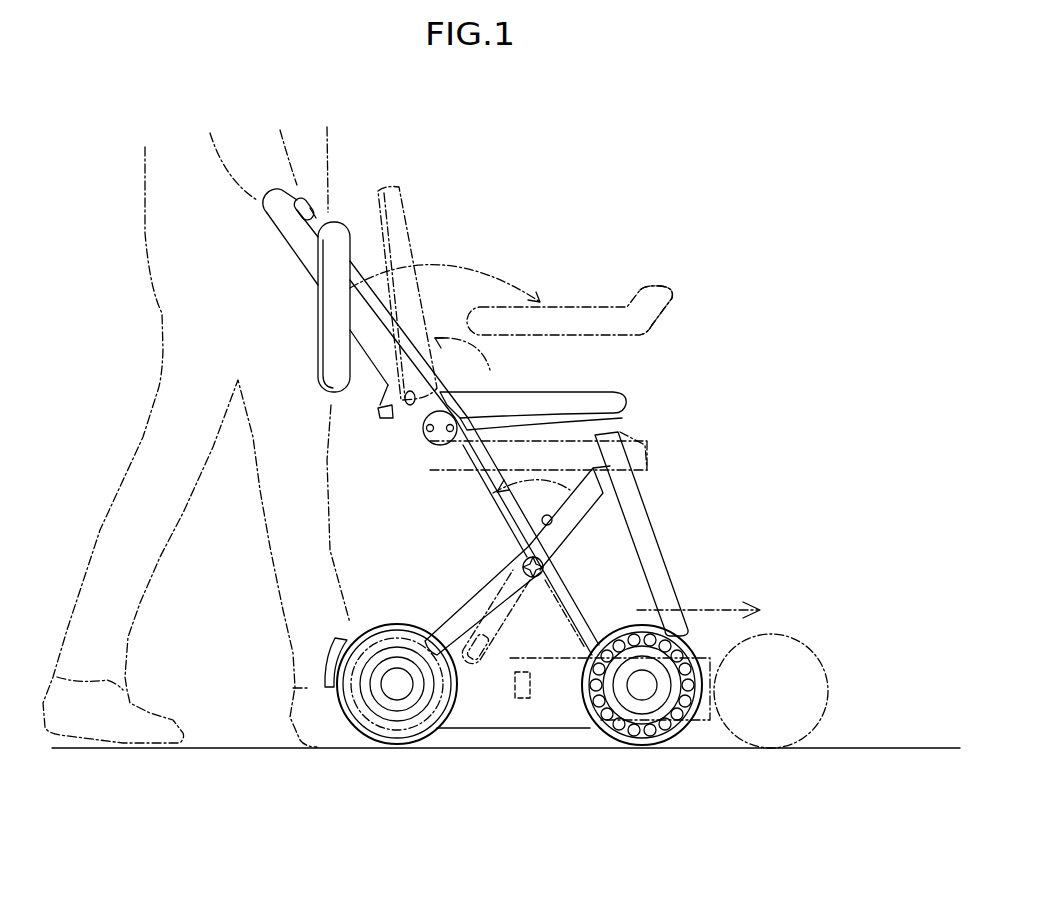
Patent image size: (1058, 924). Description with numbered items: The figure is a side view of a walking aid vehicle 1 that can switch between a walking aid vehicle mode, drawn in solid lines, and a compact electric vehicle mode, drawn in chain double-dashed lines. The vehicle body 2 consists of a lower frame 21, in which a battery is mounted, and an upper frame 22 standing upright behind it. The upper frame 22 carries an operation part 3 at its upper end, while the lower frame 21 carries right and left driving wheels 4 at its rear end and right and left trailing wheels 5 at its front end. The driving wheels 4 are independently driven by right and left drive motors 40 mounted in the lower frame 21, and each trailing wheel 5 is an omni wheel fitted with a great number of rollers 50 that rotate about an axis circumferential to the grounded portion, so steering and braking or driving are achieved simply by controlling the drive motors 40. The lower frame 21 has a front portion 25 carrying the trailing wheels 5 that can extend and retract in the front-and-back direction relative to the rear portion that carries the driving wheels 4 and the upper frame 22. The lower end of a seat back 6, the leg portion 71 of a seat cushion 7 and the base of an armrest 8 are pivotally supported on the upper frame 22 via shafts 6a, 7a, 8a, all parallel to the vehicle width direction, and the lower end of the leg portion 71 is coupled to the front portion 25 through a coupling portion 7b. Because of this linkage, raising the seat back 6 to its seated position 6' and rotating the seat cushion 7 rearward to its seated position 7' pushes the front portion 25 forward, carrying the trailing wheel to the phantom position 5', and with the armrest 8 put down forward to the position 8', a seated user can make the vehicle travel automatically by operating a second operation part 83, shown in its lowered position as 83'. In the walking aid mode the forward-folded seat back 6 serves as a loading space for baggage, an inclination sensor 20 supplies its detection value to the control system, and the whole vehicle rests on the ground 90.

The walking aid vehicle 1 is at (742, 191).
The vehicle body 2 is at (451, 594).
The operation part 3 is at (298, 198).
The driving wheels 4 is at (362, 750).
The trailing wheels 5 is at (642, 729).
The rear wheel (alternate position) 5' is at (751, 700).
The seat back 6 is at (565, 391).
The seated position of seat back 6' is at (511, 275).
The shaft 6a is at (393, 405).
The seat cushion 7 is at (663, 534).
The seated position of seat cushion 7' is at (585, 446).
The shaft 7a is at (524, 567).
The coupling portion 7b is at (495, 633).
The armrest 8 is at (448, 395).
The handle (alternate position) 8' is at (699, 327).
The shaft 8a is at (432, 444).
The inclination sensor 20 is at (533, 698).
The lower frame 21 is at (470, 730).
The upper frame 22 is at (303, 280).
The front portion 25 is at (700, 730).
The drive motor 40 is at (340, 641).
The rollers 50 is at (668, 745).
The leg portion 71 is at (577, 533).
The second operation part 83 is at (315, 287).
The grip (alternate position) 83' is at (645, 250).
The ground 90 is at (920, 748).